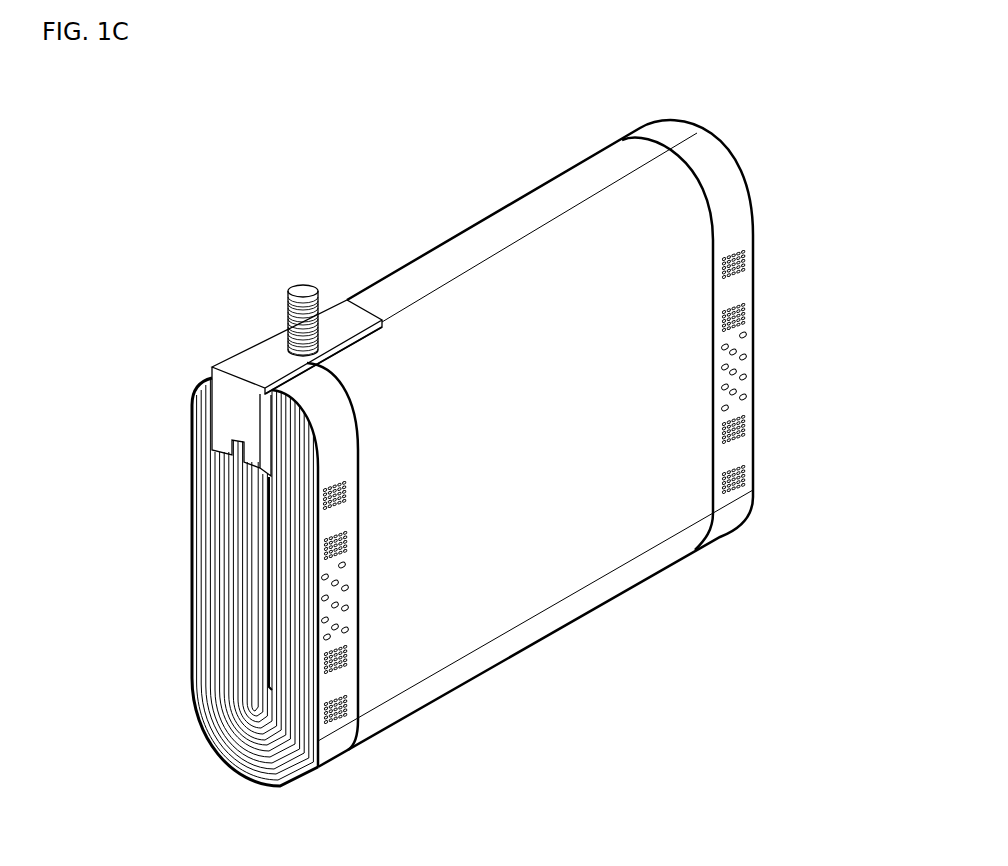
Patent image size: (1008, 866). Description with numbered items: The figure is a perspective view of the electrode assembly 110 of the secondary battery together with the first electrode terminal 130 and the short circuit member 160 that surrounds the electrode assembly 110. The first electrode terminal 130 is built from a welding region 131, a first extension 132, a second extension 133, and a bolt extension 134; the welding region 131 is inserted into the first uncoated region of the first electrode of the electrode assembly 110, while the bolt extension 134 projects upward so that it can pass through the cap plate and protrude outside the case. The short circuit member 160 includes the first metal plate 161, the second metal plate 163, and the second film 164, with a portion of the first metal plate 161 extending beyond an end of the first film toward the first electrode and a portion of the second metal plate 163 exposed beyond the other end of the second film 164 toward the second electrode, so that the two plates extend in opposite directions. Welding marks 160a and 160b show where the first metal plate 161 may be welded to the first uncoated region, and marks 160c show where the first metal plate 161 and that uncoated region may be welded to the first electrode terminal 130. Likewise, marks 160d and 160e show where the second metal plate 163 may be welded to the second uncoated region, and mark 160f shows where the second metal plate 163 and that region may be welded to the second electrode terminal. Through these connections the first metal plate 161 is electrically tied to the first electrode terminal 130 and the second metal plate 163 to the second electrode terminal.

The electrode assembly 110 is at (353, 186).
The first electrode terminal 130 is at (177, 252).
The welding region 131 is at (270, 543).
The first extension 132 is at (227, 407).
The second extension 133 is at (263, 358).
The bolt extension 134 is at (300, 290).
The short circuit member 160 is at (796, 603).
The welding mark 160a is at (333, 507).
The welding mark 160b is at (325, 712).
The welding marks 160c is at (326, 660).
The welding mark 160d is at (747, 263).
The welding mark 160e is at (747, 473).
The welding mark 160f is at (747, 420).
The first metal plate 161 is at (337, 745).
The second metal plate 163 is at (728, 522).
The second film 164 is at (543, 627).